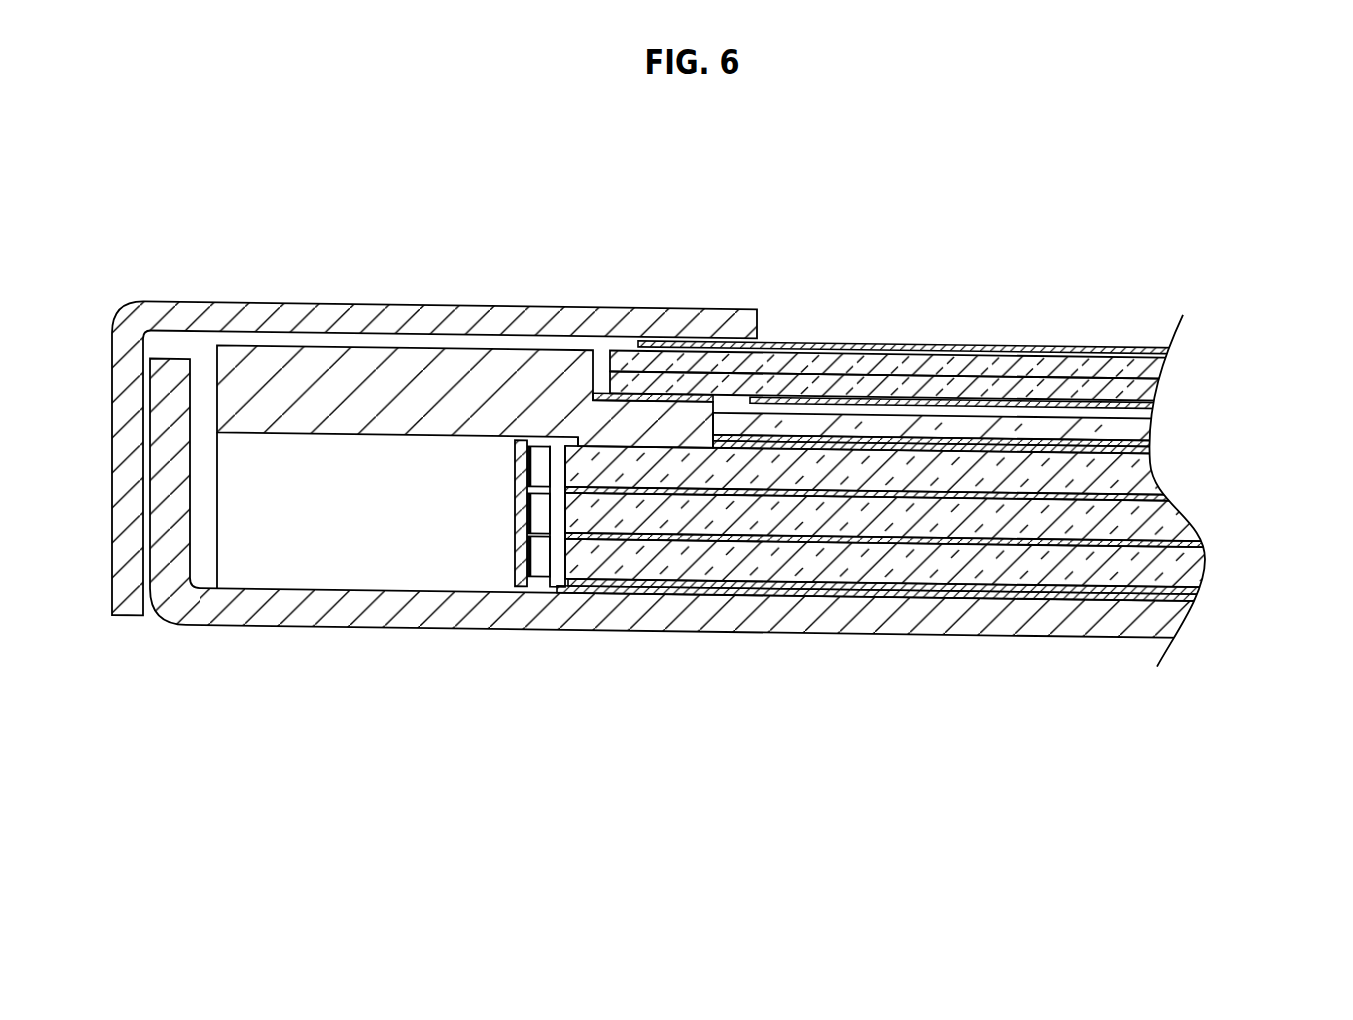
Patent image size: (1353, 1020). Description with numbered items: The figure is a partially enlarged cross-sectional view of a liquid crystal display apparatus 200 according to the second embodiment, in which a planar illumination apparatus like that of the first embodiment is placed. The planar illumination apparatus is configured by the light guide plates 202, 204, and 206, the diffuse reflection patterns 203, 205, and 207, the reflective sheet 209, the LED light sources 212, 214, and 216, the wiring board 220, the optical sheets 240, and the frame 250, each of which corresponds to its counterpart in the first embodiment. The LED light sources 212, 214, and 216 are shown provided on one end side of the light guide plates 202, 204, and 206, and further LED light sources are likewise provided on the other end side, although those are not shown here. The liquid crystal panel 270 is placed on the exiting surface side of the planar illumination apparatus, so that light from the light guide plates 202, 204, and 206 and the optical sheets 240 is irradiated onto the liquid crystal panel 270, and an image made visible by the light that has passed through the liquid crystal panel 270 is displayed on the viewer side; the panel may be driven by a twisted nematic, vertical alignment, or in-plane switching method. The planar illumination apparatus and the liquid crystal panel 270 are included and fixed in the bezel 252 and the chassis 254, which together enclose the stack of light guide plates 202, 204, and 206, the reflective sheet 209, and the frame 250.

The liquid crystal display apparatus 200 is at (186, 184).
The bezel 252 is at (290, 303).
The frame 250 is at (522, 372).
The chassis 254 is at (370, 623).
The wiring board 220 is at (515, 458).
The LED light source 212 is at (528, 486).
The LED light source 214 is at (528, 521).
The LED light source 216 is at (528, 565).
The liquid crystal panel 270 is at (1172, 352).
The optical sheets 240 is at (1172, 420).
The light guide plate 202 is at (1157, 473).
The diffuse reflection pattern 203 is at (1180, 498).
The light guide plate 204 is at (1180, 523).
The diffuse reflection pattern 205 is at (1205, 547).
The light guide plate 206 is at (1205, 567).
The diffuse reflection pattern 207 is at (1200, 593).
The reflective sheet 209 is at (1055, 599).